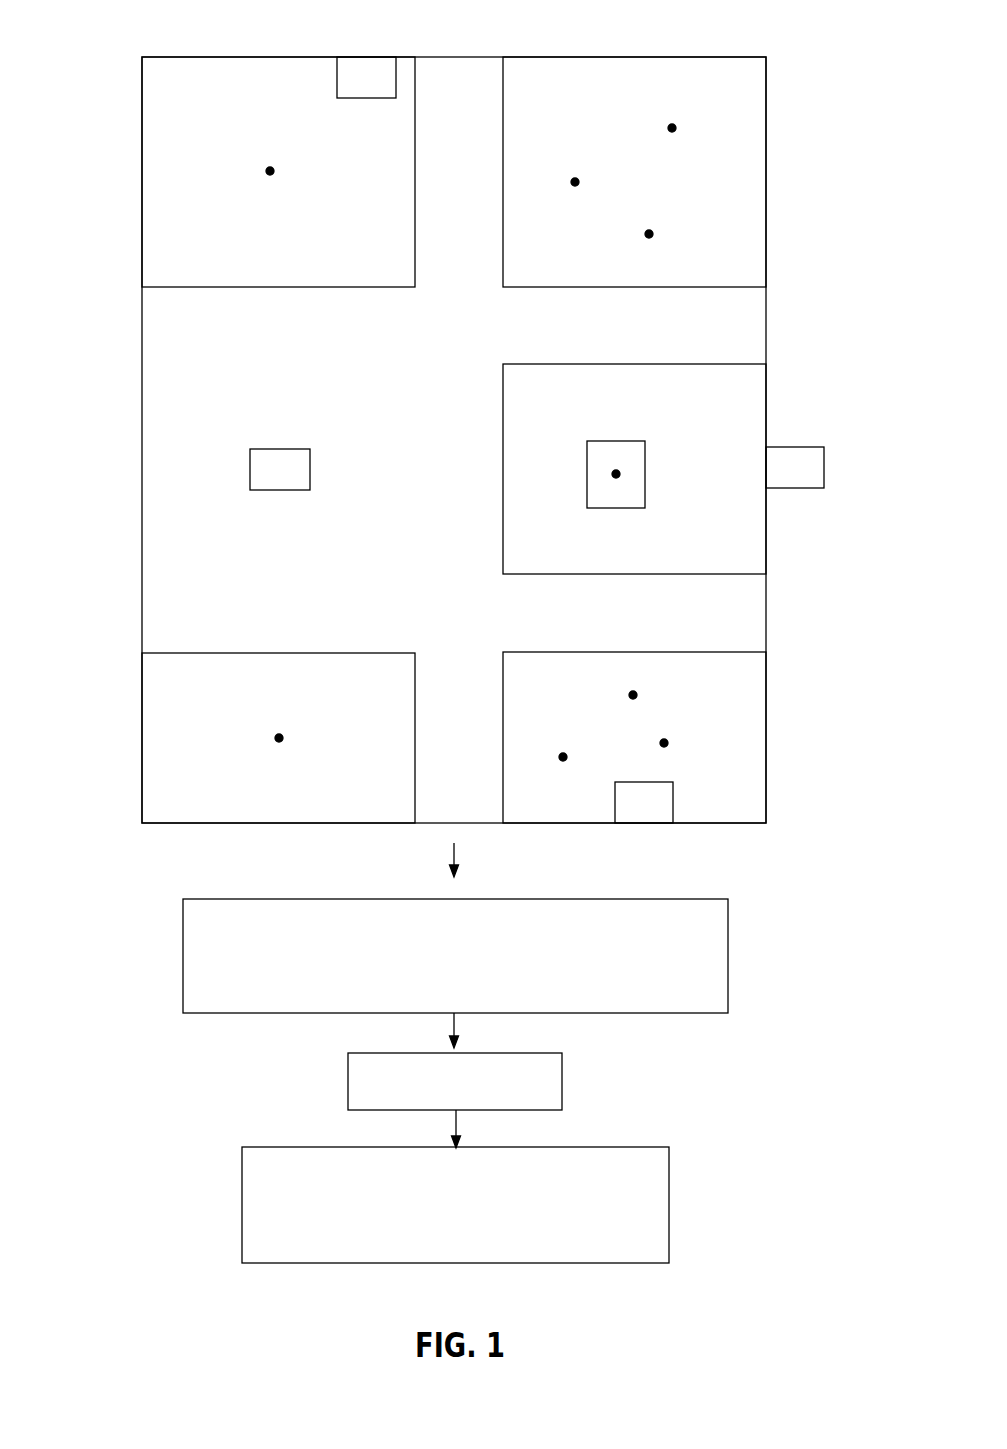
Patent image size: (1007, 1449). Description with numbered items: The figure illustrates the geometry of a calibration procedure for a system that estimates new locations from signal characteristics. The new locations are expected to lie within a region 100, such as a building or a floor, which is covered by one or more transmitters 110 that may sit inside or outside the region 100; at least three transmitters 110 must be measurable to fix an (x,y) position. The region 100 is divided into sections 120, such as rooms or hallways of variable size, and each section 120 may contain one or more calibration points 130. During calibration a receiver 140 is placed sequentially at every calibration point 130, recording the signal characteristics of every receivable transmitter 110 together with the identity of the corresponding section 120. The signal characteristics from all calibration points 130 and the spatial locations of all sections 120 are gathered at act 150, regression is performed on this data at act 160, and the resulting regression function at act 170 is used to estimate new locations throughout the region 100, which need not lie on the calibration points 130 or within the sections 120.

The region 100 is at (623, 57).
The transmitter 110 is at (337, 75).
The section 120 is at (106, 164).
The calibration point 130 is at (270, 171).
The receiver 140 is at (615, 441).
The act of gathering signal characteristics and spatial locations 150 is at (728, 958).
The act of performing regression 160 is at (562, 1080).
The act of producing regression function 170 is at (669, 1205).